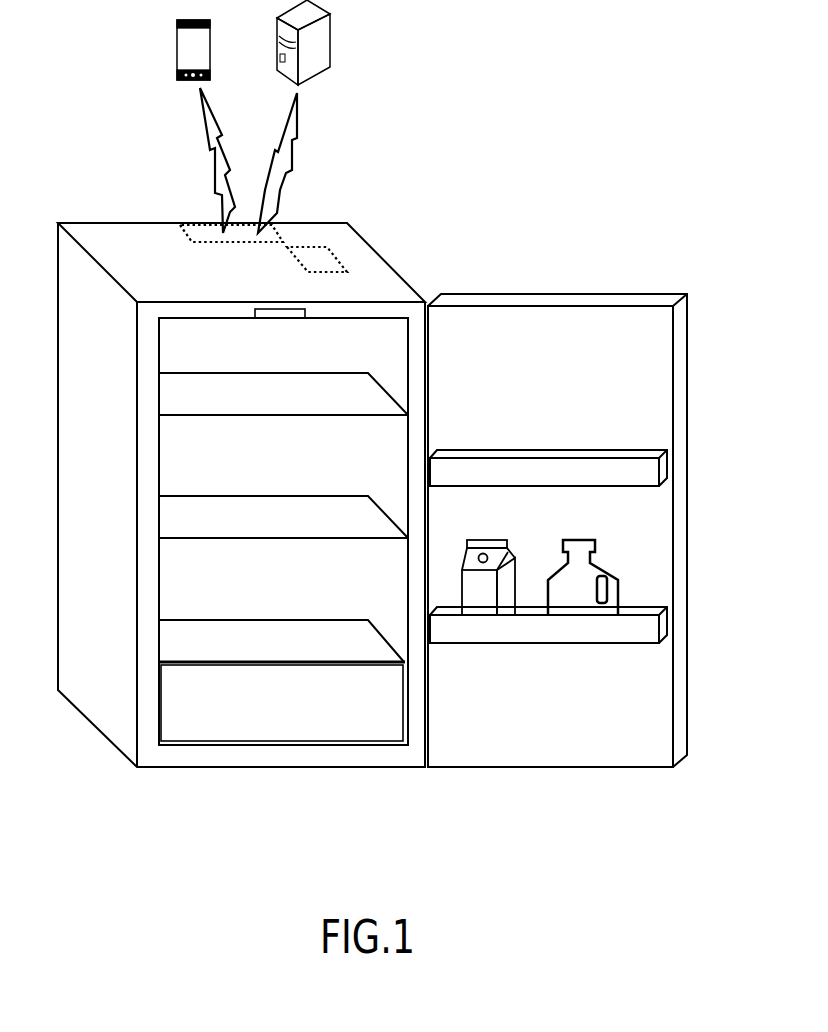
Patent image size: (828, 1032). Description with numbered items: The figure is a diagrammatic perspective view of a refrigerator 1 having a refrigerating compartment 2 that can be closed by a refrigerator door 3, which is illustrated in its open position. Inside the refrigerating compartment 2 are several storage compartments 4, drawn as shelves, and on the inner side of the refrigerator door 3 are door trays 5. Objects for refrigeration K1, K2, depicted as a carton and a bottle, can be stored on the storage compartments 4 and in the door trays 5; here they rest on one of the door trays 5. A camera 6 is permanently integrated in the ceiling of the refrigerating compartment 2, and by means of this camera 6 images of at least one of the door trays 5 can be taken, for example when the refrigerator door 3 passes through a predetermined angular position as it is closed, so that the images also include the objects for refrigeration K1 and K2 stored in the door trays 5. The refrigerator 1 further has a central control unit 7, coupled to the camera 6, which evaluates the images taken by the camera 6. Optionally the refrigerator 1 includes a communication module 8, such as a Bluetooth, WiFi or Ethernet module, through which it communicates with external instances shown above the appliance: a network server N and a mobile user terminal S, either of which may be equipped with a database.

The refrigerator 1 is at (113, 237).
The refrigerating compartment 2 is at (230, 333).
The refrigerator door 3 is at (545, 302).
The storage compartment 4 is at (205, 398).
The door tray 5 is at (545, 456).
The camera 6 is at (283, 311).
The central control unit 7 is at (310, 250).
The communication module 8 is at (195, 233).
The mobile user terminal S is at (177, 42).
The network server N is at (322, 46).
The object for refrigeration K1 is at (510, 556).
The object for refrigeration K2 is at (606, 567).